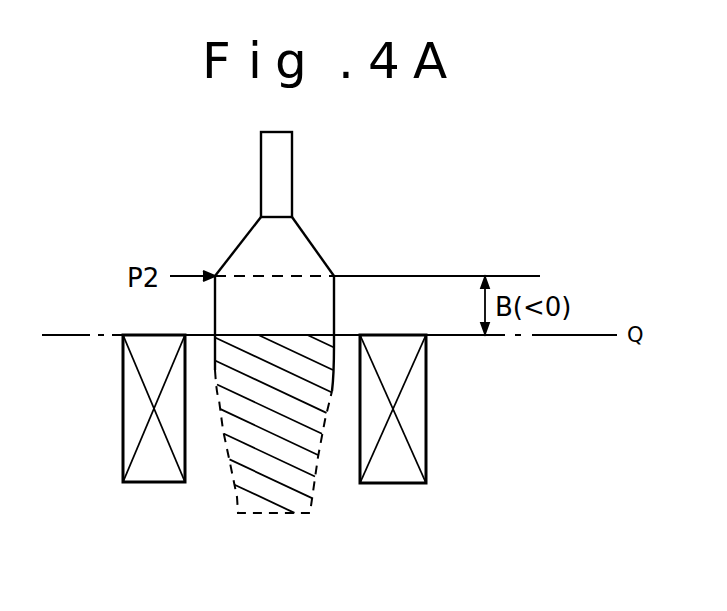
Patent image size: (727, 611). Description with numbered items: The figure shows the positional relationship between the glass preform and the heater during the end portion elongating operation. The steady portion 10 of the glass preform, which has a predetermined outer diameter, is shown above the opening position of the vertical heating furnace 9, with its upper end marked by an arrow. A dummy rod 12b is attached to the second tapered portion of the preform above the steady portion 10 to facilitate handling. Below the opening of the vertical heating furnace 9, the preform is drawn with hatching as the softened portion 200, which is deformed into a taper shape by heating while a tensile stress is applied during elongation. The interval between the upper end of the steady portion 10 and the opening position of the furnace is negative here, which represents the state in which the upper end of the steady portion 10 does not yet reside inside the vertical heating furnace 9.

The dummy rod 12b is at (280, 178).
The steady portion 10 is at (335, 308).
The softened portion 200 is at (247, 428).
The vertical heating furnace 9 is at (130, 402).